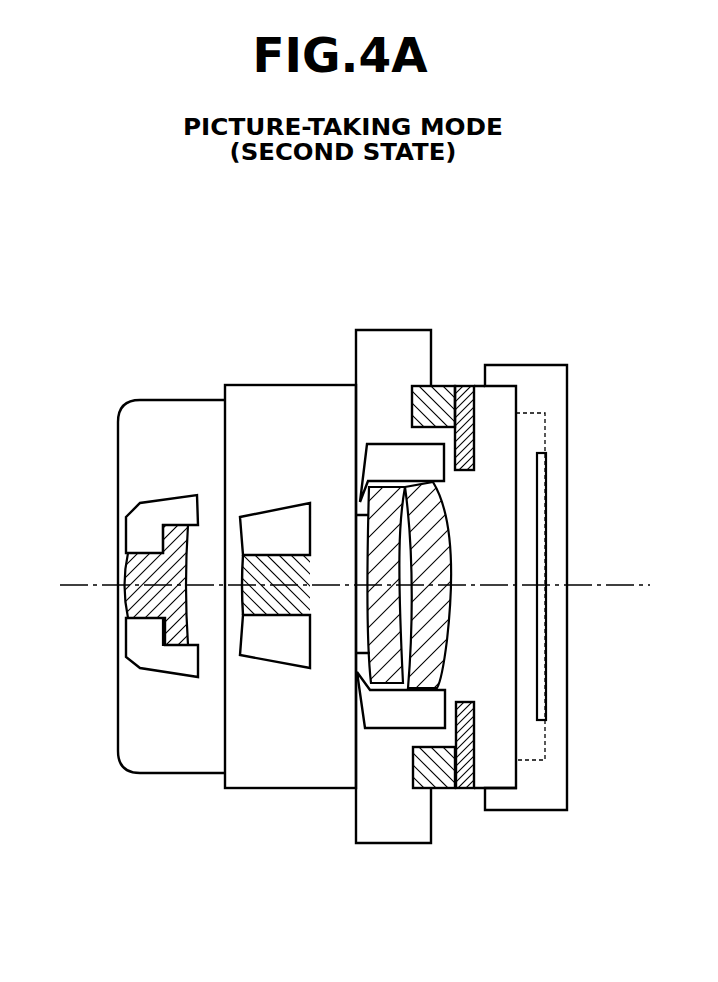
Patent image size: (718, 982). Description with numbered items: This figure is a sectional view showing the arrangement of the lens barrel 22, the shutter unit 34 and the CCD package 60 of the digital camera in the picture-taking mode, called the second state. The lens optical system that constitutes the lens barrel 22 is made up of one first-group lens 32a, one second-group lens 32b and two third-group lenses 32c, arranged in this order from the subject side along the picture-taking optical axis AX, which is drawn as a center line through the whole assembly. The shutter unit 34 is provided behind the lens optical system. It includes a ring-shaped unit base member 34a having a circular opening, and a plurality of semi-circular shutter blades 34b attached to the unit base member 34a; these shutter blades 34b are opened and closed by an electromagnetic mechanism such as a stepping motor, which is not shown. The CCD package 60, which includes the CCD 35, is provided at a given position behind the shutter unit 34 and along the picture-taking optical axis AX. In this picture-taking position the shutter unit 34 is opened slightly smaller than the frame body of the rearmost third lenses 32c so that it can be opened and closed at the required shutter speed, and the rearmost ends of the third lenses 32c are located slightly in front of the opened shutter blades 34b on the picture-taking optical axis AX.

The lens barrel 22 is at (148, 322).
The first-group lens 32a is at (177, 535).
The second-group lens 32b is at (263, 560).
The third-group lenses 32c is at (405, 530).
The shutter unit 34 is at (465, 378).
The unit base member 34a is at (412, 403).
The shutter blades 34b is at (474, 435).
The CCD 35 is at (541, 505).
The CCD package 60 is at (567, 381).
The picture-taking optical axis AX is at (77, 588).